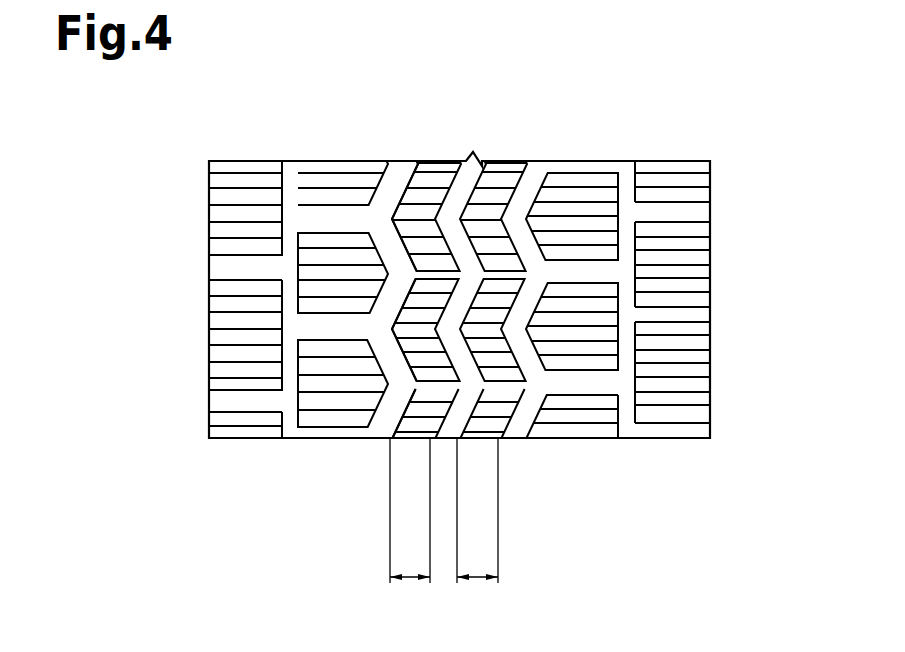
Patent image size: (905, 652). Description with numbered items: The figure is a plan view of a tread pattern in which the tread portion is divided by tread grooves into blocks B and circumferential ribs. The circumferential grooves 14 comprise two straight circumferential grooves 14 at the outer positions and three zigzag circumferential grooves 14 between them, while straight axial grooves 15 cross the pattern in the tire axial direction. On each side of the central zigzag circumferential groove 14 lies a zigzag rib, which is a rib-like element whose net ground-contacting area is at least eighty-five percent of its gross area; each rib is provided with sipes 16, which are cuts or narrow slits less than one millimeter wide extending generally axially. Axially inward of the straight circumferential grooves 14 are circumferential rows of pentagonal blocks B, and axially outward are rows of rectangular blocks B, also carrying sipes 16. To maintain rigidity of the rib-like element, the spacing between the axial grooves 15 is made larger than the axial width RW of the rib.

The block B is at (217, 212).
The circumferential groove 14 is at (290, 432).
The axial groove 15 is at (580, 165).
The sipe 16 is at (421, 186).
The axial width of the rib-like element RW is at (488, 620).